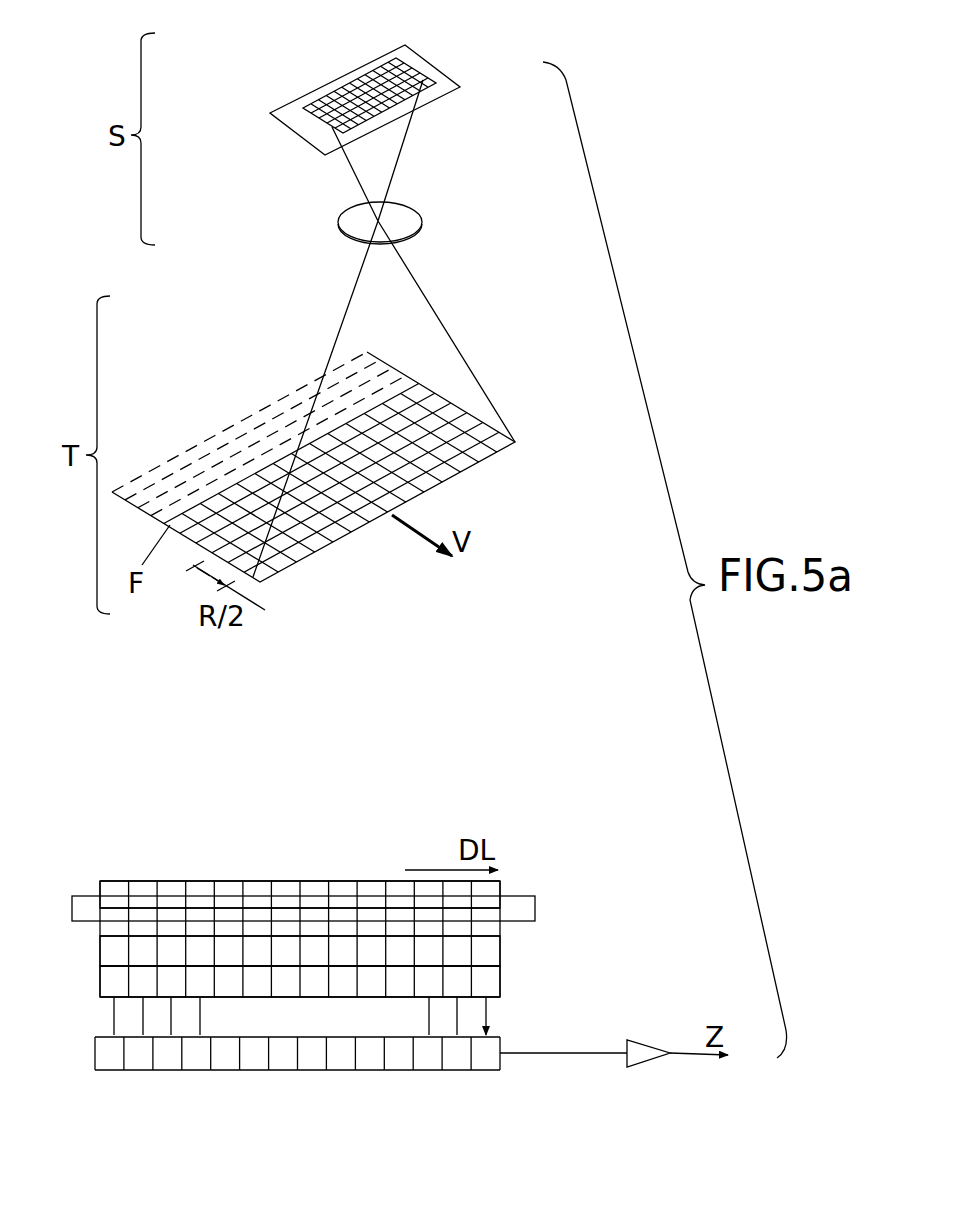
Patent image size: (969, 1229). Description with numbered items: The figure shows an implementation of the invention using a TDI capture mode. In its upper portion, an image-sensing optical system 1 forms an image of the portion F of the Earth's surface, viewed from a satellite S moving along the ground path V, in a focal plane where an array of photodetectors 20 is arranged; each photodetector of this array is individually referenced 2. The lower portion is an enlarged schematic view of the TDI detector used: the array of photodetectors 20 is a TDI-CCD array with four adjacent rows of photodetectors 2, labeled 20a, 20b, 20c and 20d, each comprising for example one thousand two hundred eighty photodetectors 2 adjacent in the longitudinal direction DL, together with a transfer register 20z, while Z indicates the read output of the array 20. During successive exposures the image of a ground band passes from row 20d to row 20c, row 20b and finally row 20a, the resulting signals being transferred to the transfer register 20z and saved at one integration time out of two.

The image-sensing optical system 1 is at (412, 222).
The array of photodetectors 20 is at (290, 117).
The photodetector 2 is at (318, 950).
The row of photodetectors 20a is at (495, 981).
The row of photodetectors 20b is at (490, 955).
The row of photodetectors 20c is at (492, 928).
The row of photodetectors 20d is at (493, 892).
The transfer register 20z is at (487, 1052).